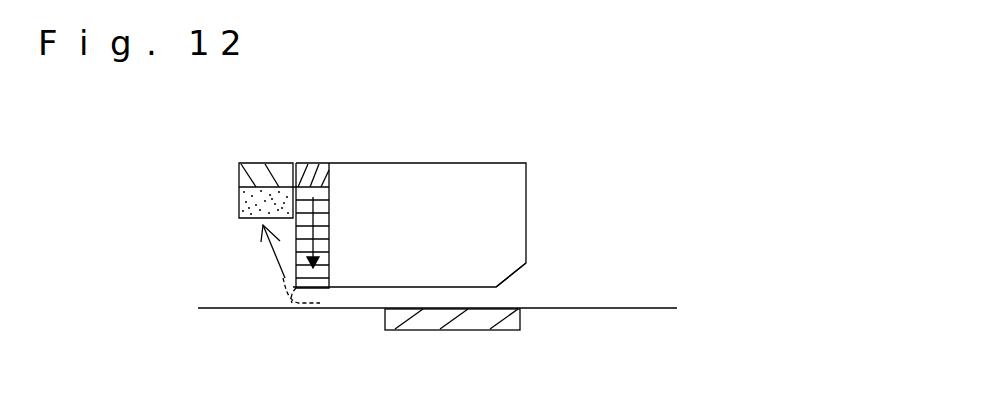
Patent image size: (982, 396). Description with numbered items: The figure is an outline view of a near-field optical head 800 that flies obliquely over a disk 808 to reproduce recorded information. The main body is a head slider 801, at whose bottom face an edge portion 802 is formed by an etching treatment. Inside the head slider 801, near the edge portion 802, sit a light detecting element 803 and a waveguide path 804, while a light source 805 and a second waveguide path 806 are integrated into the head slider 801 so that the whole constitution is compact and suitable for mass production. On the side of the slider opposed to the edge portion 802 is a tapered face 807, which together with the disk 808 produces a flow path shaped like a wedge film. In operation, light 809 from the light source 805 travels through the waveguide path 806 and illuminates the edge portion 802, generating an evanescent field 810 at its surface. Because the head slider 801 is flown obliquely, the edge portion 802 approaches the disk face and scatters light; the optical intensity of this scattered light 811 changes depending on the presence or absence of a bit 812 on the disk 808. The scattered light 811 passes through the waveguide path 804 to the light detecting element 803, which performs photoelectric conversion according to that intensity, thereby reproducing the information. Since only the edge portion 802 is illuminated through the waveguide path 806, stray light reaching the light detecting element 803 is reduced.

The near-field optical head 800 is at (170, 165).
The head slider 801 is at (528, 180).
The edge portion 802 is at (290, 290).
The light detecting element 803 is at (258, 166).
The waveguide path 804 is at (245, 207).
The light source 805 is at (310, 163).
The waveguide path 806 is at (329, 216).
The tapered face 807 is at (528, 273).
The disk 808 is at (643, 314).
The light 809 is at (333, 247).
The evanescent field 810 is at (283, 292).
The scattered light 811 is at (267, 252).
The bit 812 is at (512, 318).